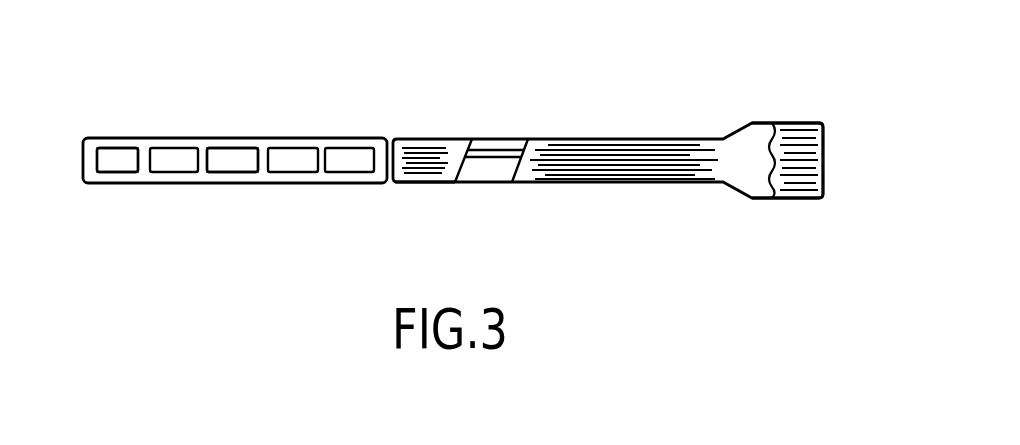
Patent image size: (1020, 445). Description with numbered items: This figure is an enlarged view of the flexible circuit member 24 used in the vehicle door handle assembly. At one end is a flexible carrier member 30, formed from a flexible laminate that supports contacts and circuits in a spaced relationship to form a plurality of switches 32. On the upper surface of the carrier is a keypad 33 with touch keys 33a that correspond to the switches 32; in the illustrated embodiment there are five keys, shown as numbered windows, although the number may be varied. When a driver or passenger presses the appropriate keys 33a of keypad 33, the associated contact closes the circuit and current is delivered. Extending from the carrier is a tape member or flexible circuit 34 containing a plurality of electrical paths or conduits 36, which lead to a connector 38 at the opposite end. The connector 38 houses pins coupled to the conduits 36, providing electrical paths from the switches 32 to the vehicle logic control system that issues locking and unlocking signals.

The flexible circuit member 24 is at (440, 115).
The flexible carrier member 30 is at (296, 148).
The switches 32 is at (330, 205).
The keypad 33 is at (213, 118).
The touch keys 33a is at (118, 148).
The tape member or flexible circuit 34 is at (428, 212).
The electrical paths or conduits 36 is at (510, 157).
The connector 38 is at (791, 98).